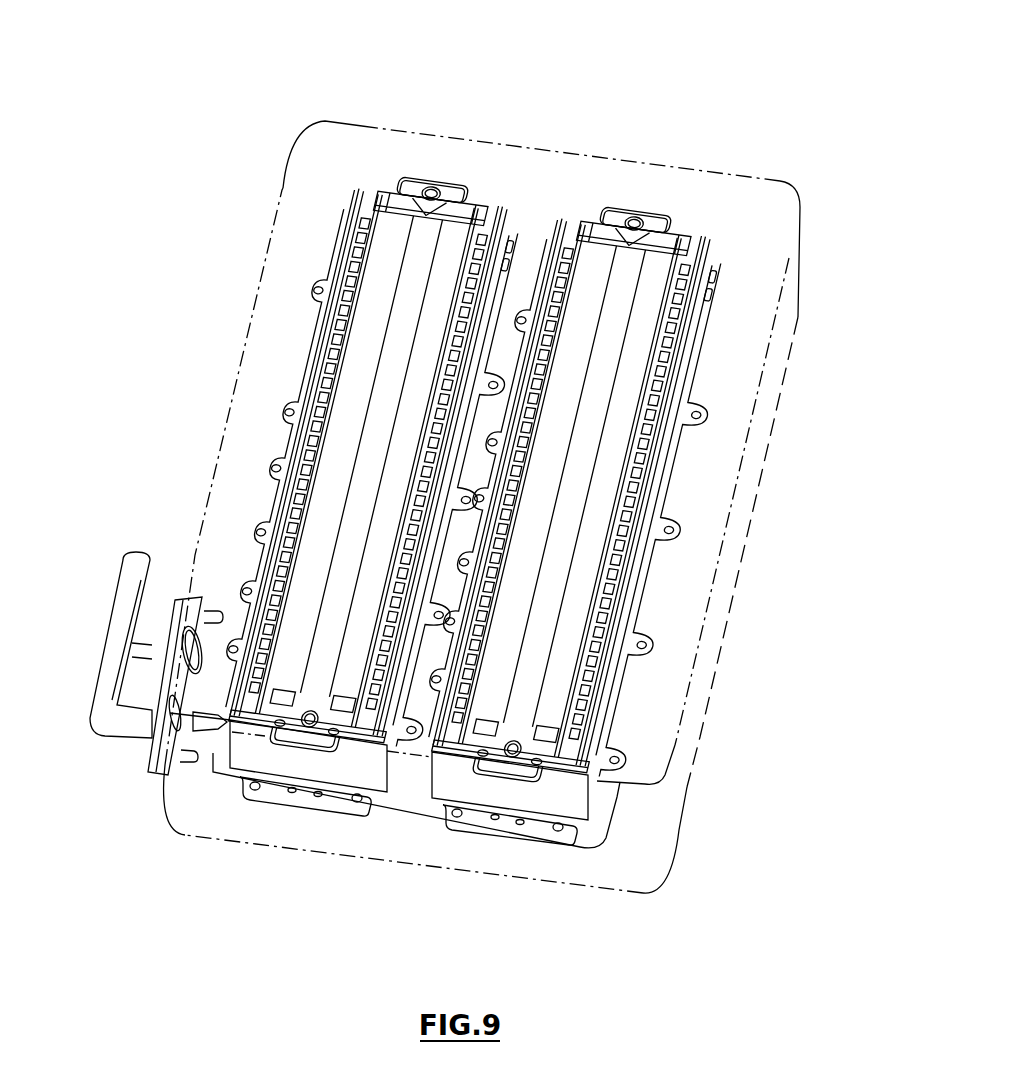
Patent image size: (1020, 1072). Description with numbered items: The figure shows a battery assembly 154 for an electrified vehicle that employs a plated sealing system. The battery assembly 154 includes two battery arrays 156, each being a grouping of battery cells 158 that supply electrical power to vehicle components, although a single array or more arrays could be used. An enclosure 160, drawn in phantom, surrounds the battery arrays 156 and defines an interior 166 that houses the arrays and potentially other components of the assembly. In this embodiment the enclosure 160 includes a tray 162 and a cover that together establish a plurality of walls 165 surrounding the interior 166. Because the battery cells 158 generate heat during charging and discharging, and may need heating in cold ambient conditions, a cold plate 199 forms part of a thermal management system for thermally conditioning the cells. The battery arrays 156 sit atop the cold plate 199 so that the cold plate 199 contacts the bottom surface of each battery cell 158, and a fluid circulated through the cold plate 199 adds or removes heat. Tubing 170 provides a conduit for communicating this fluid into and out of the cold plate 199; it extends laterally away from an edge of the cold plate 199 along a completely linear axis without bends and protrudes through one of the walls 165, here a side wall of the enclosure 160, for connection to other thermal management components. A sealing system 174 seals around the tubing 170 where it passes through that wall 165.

The battery assembly 154 is at (469, 88).
The battery arrays 156 is at (584, 255).
The battery cells 158 is at (470, 214).
The enclosure 160 is at (808, 200).
The tray 162 is at (750, 460).
The walls 165 is at (254, 376).
The interior 166 is at (726, 222).
The tubing 170 is at (211, 652).
The sealing system 174 is at (178, 673).
The cold plate 199 is at (393, 805).